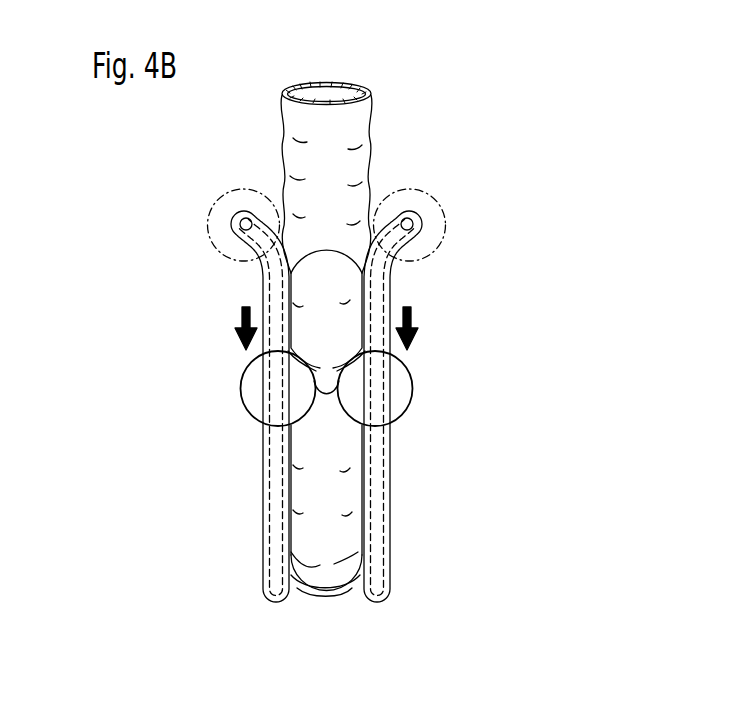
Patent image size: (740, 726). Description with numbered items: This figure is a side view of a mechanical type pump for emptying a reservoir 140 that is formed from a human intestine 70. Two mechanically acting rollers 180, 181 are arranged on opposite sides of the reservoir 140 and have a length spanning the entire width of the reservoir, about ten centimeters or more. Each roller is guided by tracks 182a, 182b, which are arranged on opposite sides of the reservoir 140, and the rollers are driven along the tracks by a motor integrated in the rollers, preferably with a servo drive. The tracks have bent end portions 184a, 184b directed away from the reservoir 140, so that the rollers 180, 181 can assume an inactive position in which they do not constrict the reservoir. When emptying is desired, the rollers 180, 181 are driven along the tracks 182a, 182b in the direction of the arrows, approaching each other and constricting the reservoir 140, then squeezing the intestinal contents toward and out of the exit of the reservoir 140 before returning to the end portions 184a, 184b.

The human intestine 70 is at (360, 132).
The reservoir 140 is at (325, 613).
The roller 180 is at (400, 383).
The roller 181 is at (255, 384).
The track 182a is at (373, 483).
The track 182b is at (276, 487).
The bent end portion 184a is at (410, 230).
The bent end portion 184b is at (243, 228).